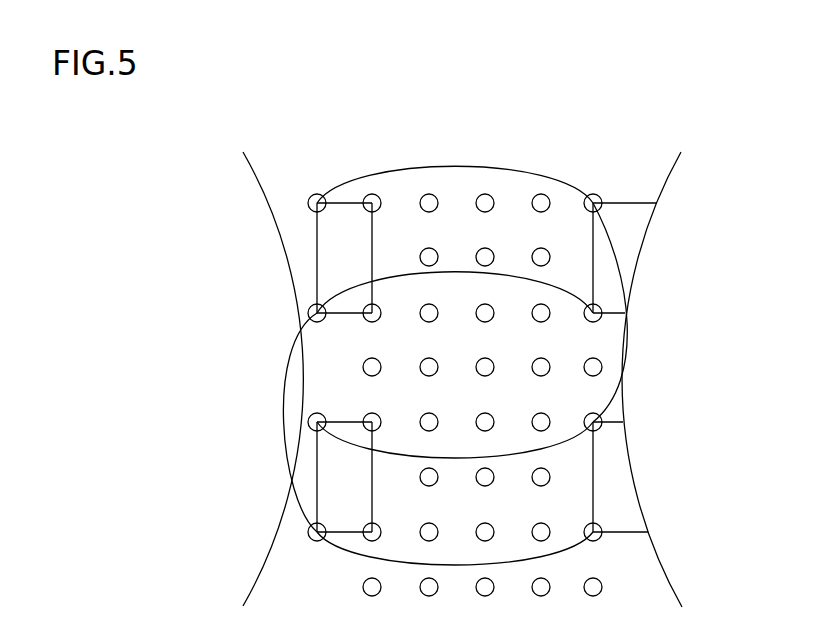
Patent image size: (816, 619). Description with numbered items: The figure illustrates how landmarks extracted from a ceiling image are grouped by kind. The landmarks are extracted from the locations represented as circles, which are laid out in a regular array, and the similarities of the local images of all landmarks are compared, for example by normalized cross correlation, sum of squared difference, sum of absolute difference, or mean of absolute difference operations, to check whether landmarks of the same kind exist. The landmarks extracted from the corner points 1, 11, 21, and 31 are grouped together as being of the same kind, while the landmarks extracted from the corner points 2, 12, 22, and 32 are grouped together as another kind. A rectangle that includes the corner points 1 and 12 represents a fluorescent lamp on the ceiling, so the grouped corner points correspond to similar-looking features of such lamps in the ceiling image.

The corner point 1 is at (309, 203).
The corner point 11 is at (600, 197).
The corner point 12 is at (309, 312).
The corner point 2 is at (601, 307).
The corner point 21 is at (601, 417).
The corner point 22 is at (308, 535).
The corner point 31 is at (309, 421).
The corner point 32 is at (602, 536).